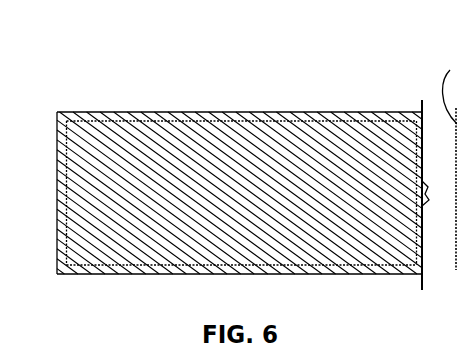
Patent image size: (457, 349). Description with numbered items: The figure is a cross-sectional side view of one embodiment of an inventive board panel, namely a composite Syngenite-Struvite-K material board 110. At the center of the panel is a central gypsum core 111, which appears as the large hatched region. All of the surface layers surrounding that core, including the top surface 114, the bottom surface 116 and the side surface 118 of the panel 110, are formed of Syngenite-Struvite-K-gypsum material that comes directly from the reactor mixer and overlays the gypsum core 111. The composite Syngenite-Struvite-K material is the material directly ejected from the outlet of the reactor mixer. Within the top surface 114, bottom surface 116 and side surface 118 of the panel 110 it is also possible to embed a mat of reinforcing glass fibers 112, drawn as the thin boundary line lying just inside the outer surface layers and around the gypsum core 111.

The composite Syngenite-Struvite-K material board 110 is at (372, 103).
The central gypsum core 111 is at (289, 188).
The mat of reinforcing glass fibers 112 is at (238, 120).
The top surface 114 is at (168, 111).
The bottom surface 116 is at (112, 267).
The side surface 118 is at (56, 149).